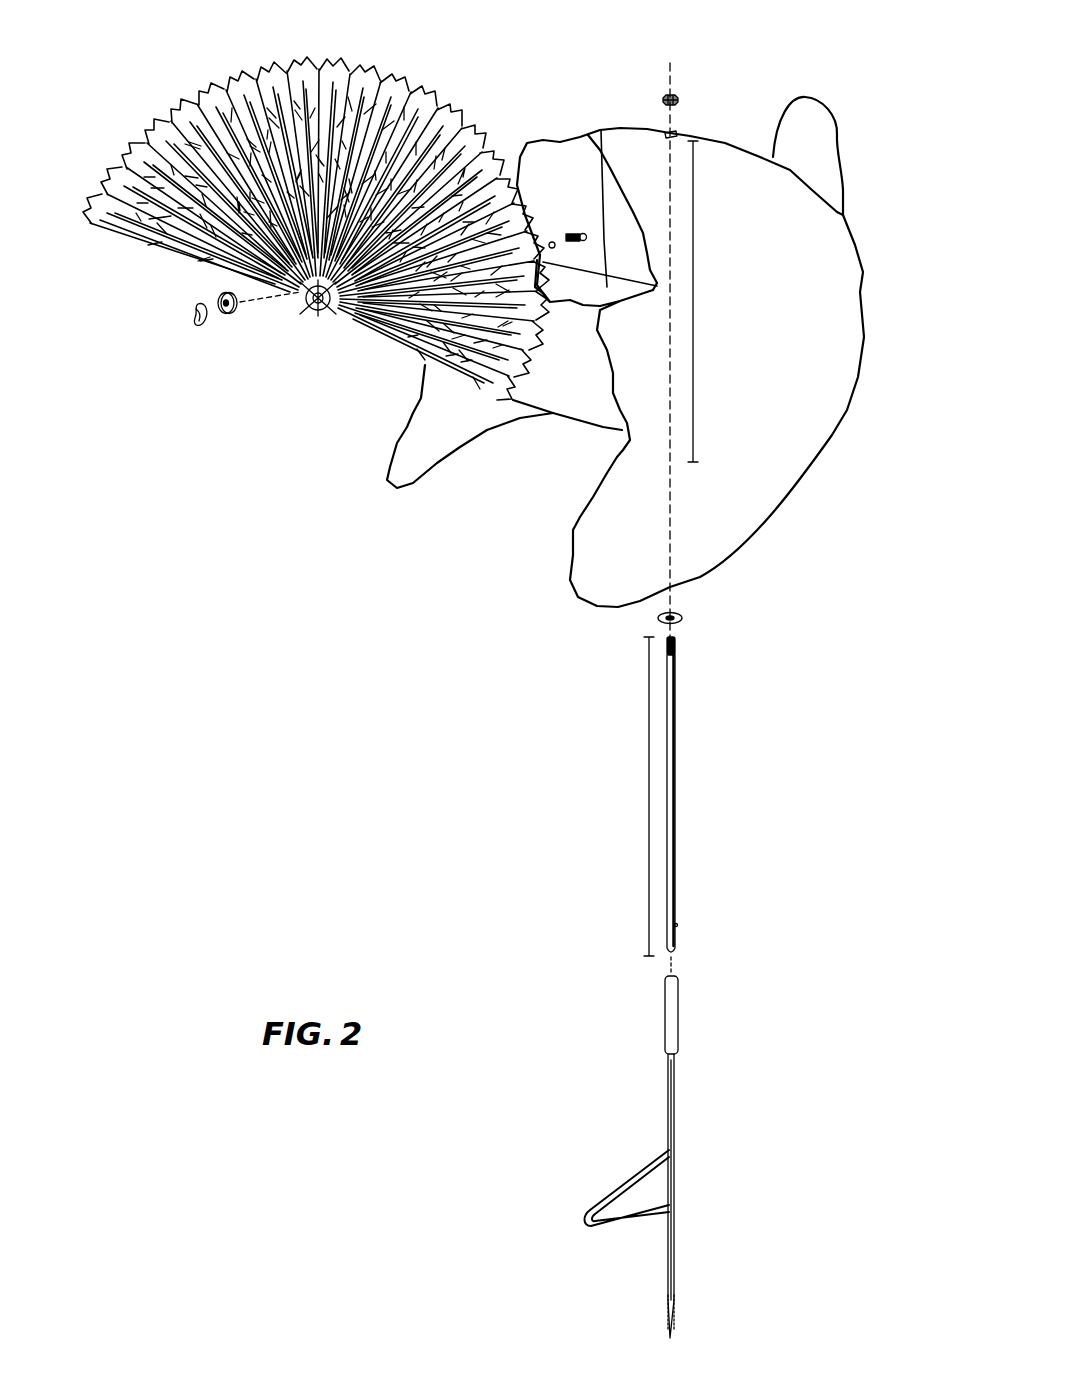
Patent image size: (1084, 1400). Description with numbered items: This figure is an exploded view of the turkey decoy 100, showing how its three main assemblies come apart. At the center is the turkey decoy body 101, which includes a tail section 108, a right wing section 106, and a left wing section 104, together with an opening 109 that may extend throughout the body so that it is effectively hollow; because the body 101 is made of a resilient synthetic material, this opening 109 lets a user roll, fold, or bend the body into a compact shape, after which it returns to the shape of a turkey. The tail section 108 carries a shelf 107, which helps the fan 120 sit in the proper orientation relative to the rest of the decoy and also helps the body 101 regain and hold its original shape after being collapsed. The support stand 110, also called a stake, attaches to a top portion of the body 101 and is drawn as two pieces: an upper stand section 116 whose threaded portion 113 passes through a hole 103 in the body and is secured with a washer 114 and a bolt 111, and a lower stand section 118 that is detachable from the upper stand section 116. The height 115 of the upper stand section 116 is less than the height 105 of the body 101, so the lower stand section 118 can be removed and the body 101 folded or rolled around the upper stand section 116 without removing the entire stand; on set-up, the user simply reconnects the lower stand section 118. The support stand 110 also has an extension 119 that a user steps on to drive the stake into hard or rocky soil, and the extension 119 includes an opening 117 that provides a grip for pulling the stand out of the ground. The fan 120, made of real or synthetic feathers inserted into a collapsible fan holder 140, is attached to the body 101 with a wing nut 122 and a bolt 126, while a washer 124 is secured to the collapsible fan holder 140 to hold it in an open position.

The turkey decoy 100 is at (840, 57).
The turkey decoy body 101 is at (843, 215).
The hole 103 is at (676, 132).
The left wing section 104 is at (395, 443).
The height 105 is at (696, 158).
The right wing section 106 is at (832, 380).
The shelf 107 is at (601, 130).
The tail section 108 is at (571, 232).
The opening 109 is at (510, 500).
The support stand 110 is at (808, 862).
The bolt 111 is at (676, 98).
The threaded portion 113 is at (677, 645).
The washer 114 is at (683, 616).
The height 115 is at (650, 840).
The upper stand section 116 is at (677, 805).
The opening 117 is at (635, 1202).
The lower stand section 118 is at (675, 1110).
The extension 119 is at (626, 1182).
The fan 120 is at (452, 86).
The wing nut 122 is at (195, 320).
The washer 124 is at (227, 313).
The bolt 126 is at (548, 147).
The collapsible fan holder 140 is at (320, 308).